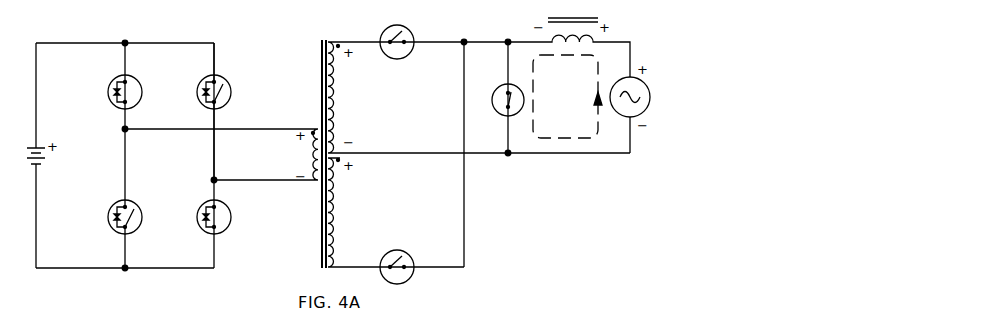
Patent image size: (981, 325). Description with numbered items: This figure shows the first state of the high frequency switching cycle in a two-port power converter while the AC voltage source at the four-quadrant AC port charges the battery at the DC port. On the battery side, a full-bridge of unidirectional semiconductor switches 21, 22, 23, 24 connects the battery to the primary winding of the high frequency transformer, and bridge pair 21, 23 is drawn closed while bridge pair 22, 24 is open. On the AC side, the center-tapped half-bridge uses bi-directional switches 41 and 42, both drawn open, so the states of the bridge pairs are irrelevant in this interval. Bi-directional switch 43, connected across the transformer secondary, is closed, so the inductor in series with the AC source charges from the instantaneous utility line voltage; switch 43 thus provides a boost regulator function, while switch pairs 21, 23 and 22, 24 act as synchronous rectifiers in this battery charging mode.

The unidirectional semiconductor switch 21 is at (113, 86).
The unidirectional semiconductor switch 22 is at (203, 111).
The unidirectional semiconductor switch 23 is at (205, 210).
The unidirectional semiconductor switch 24 is at (116, 210).
The bi-directional semiconductor switch 41 is at (397, 33).
The bi-directional semiconductor switch 42 is at (397, 257).
The bi-directional semiconductor switch 43 is at (500, 97).